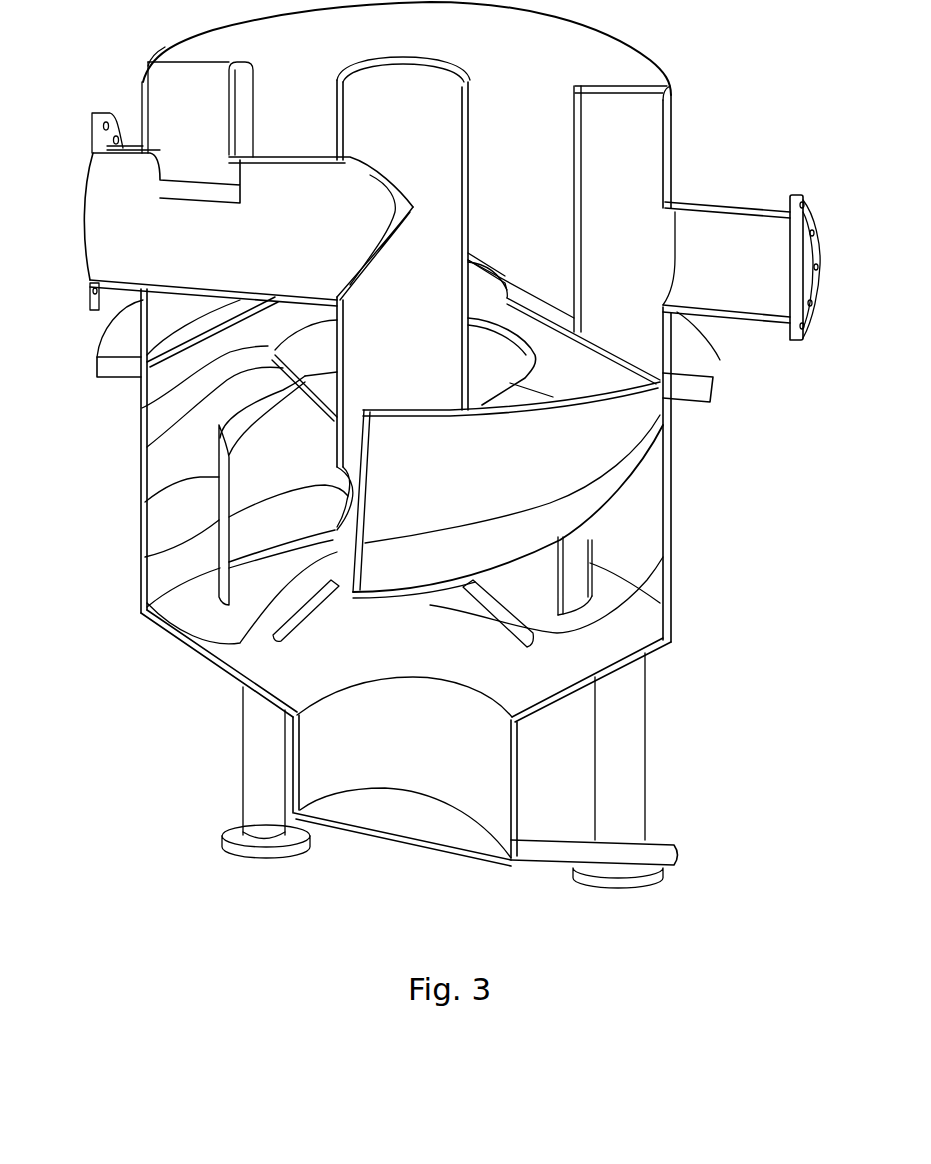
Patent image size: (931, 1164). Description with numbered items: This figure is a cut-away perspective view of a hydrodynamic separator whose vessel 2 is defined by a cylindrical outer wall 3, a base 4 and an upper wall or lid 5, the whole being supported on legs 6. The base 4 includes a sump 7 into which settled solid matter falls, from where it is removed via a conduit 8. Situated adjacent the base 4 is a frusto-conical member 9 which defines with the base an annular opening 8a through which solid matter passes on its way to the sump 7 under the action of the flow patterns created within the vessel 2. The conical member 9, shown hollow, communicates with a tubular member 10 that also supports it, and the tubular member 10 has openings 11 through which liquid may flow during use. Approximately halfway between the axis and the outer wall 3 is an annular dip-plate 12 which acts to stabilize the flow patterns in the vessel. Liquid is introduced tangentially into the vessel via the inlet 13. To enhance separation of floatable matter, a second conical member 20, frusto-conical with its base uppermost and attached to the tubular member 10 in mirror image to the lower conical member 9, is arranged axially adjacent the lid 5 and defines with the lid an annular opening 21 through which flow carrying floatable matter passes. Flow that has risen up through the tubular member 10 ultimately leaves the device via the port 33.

The vessel 2 is at (697, 463).
The cylindrical outer wall 3 is at (673, 527).
The base 4 is at (658, 650).
The upper wall or lid 5 is at (543, 300).
The legs 6 is at (258, 768).
The sump 7 is at (450, 782).
The conduit 8 is at (593, 852).
The annular opening 8a is at (250, 660).
The frusto-conical member 9 is at (663, 557).
The tubular member 10 is at (255, 650).
The openings 11 is at (347, 549).
The annular dip-plate 12 is at (213, 477).
The inlet 13 is at (755, 292).
The conical member 20 is at (213, 447).
The annular opening 21 is at (175, 403).
The port 33 is at (137, 222).